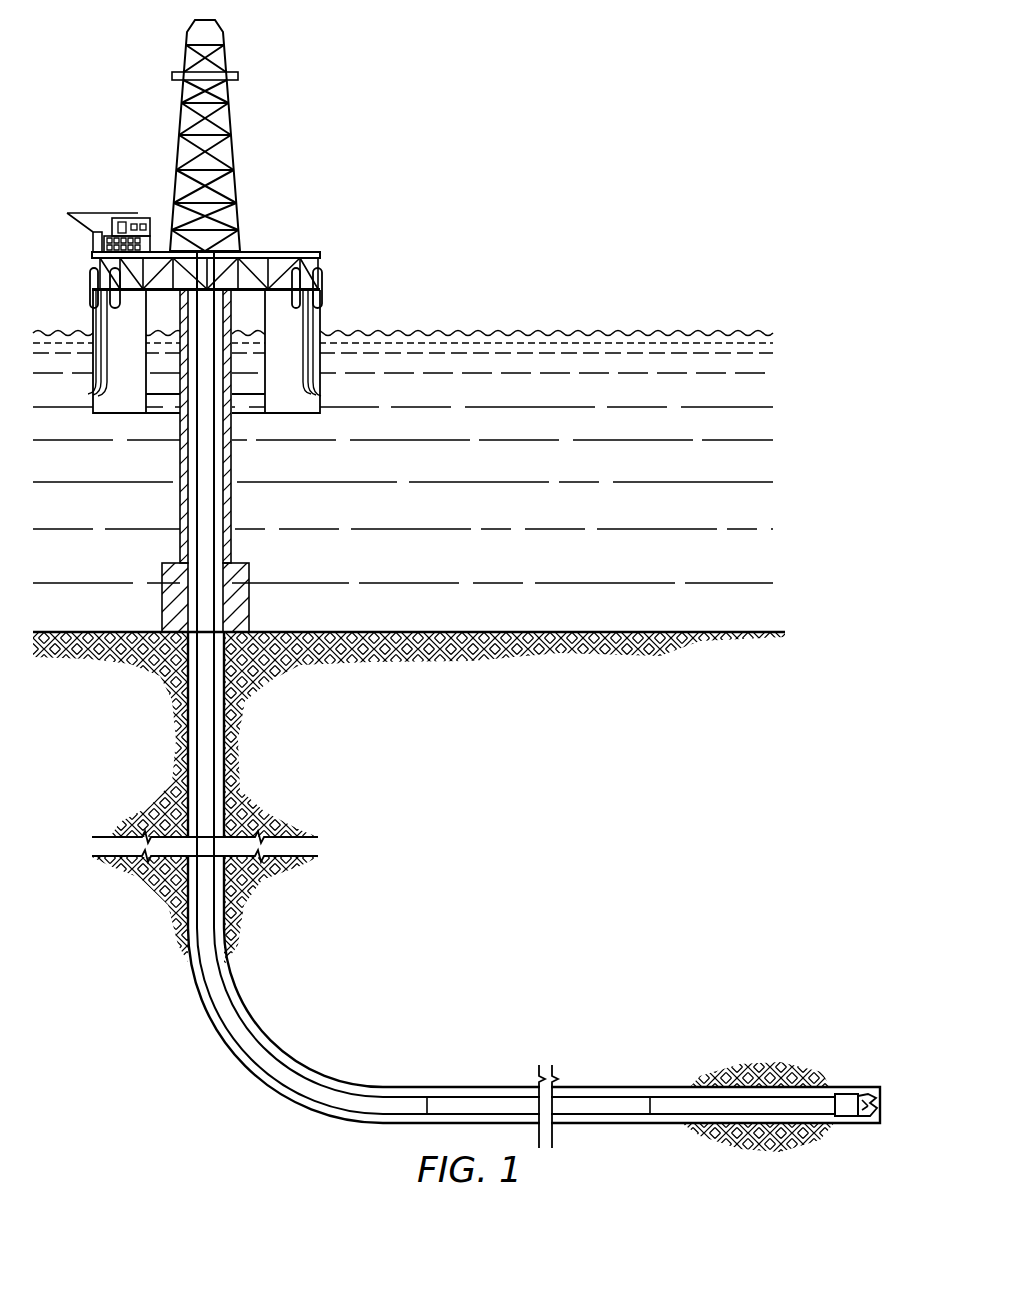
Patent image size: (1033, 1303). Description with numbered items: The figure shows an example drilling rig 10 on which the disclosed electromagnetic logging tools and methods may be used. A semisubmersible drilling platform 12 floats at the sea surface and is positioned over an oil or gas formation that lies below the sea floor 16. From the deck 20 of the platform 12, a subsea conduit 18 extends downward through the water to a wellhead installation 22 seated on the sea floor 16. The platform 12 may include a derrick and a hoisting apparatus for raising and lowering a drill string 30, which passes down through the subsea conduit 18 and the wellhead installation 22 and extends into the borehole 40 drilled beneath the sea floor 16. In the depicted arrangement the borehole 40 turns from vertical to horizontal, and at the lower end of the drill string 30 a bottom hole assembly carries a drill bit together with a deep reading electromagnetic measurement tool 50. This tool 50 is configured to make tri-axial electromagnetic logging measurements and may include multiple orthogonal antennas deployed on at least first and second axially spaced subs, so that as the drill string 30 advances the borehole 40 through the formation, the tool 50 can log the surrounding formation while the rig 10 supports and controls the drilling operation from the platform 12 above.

The drilling rig 10 is at (327, 131).
The semisubmersible drilling platform 12 is at (305, 251).
The sea floor 16 is at (456, 631).
The subsea conduit 18 is at (232, 502).
The deck 20 is at (318, 290).
The wellhead installation 22 is at (246, 563).
The drill string 30 is at (207, 428).
The borehole 40 is at (188, 740).
The deep reading electromagnetic measurement tool 50 is at (653, 1053).